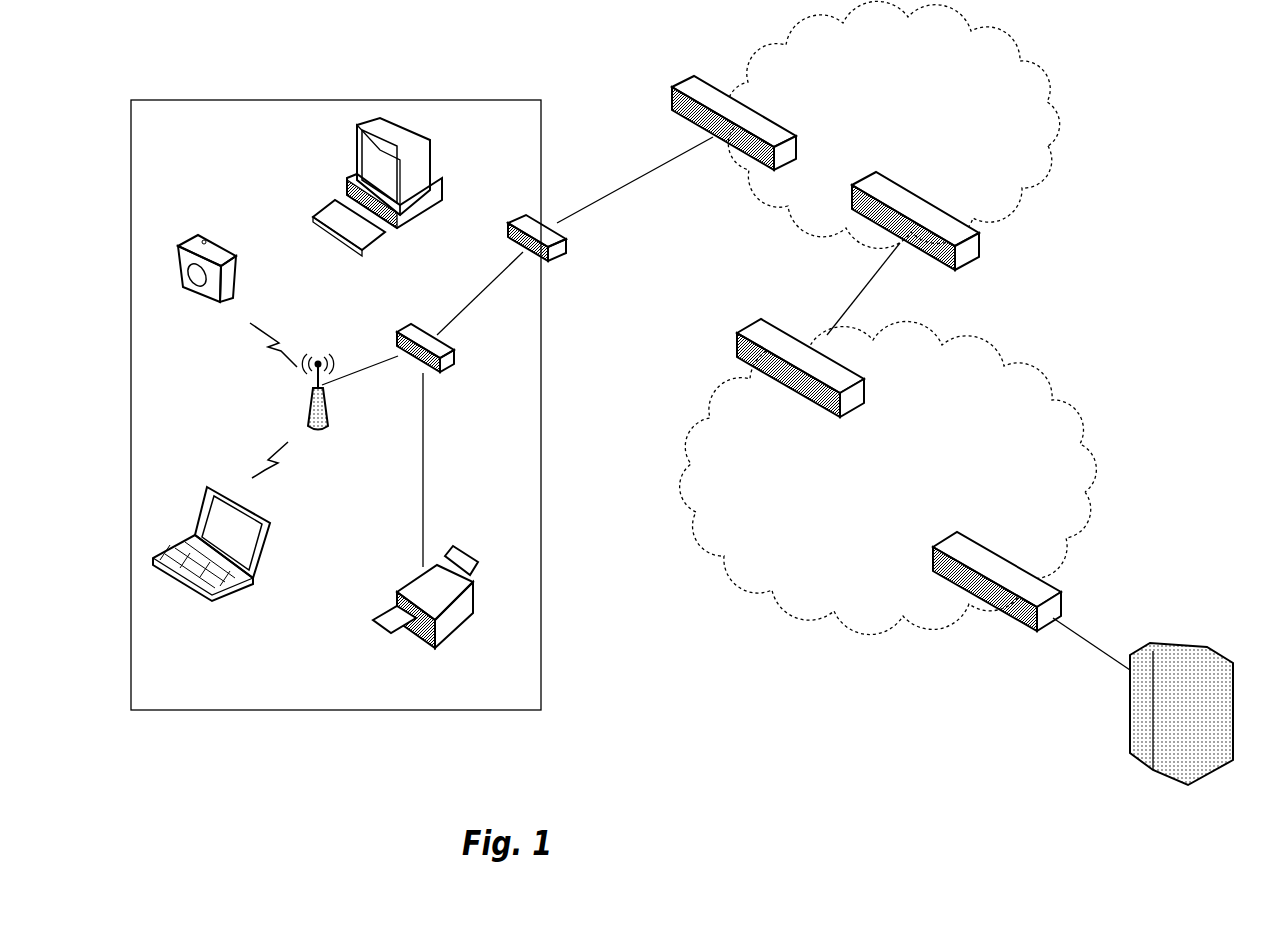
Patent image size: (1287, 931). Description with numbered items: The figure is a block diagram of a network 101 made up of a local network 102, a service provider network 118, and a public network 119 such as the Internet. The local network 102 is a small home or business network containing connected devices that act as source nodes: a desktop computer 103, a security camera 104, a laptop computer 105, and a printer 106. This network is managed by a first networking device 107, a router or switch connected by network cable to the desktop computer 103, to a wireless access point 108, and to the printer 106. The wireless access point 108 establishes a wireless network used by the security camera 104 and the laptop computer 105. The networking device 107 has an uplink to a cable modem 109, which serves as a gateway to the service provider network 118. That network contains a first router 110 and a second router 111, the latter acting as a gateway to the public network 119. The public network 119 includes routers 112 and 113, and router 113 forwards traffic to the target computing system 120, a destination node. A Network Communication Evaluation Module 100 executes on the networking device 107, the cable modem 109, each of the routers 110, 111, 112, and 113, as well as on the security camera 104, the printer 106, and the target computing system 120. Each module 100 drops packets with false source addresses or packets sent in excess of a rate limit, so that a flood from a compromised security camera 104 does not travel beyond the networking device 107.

The Network Communication Evaluation Module 100 is at (711, 358).
The network 101 is at (1186, 140).
The local network 102 is at (336, 405).
The desktop computer 103 is at (418, 330).
The security camera 104 is at (227, 301).
The laptop computer 105 is at (211, 554).
The printer 106 is at (425, 610).
The first networking device 107 is at (455, 353).
The wireless access point 108 is at (330, 412).
The cable modem 109 is at (570, 244).
The first router 110 is at (752, 104).
The second router 111 is at (983, 240).
The router 112 is at (770, 317).
The router 113 is at (1060, 573).
The service provider network 118 is at (893, 124).
The public network 119 is at (888, 477).
The target computing system 120 is at (1180, 742).